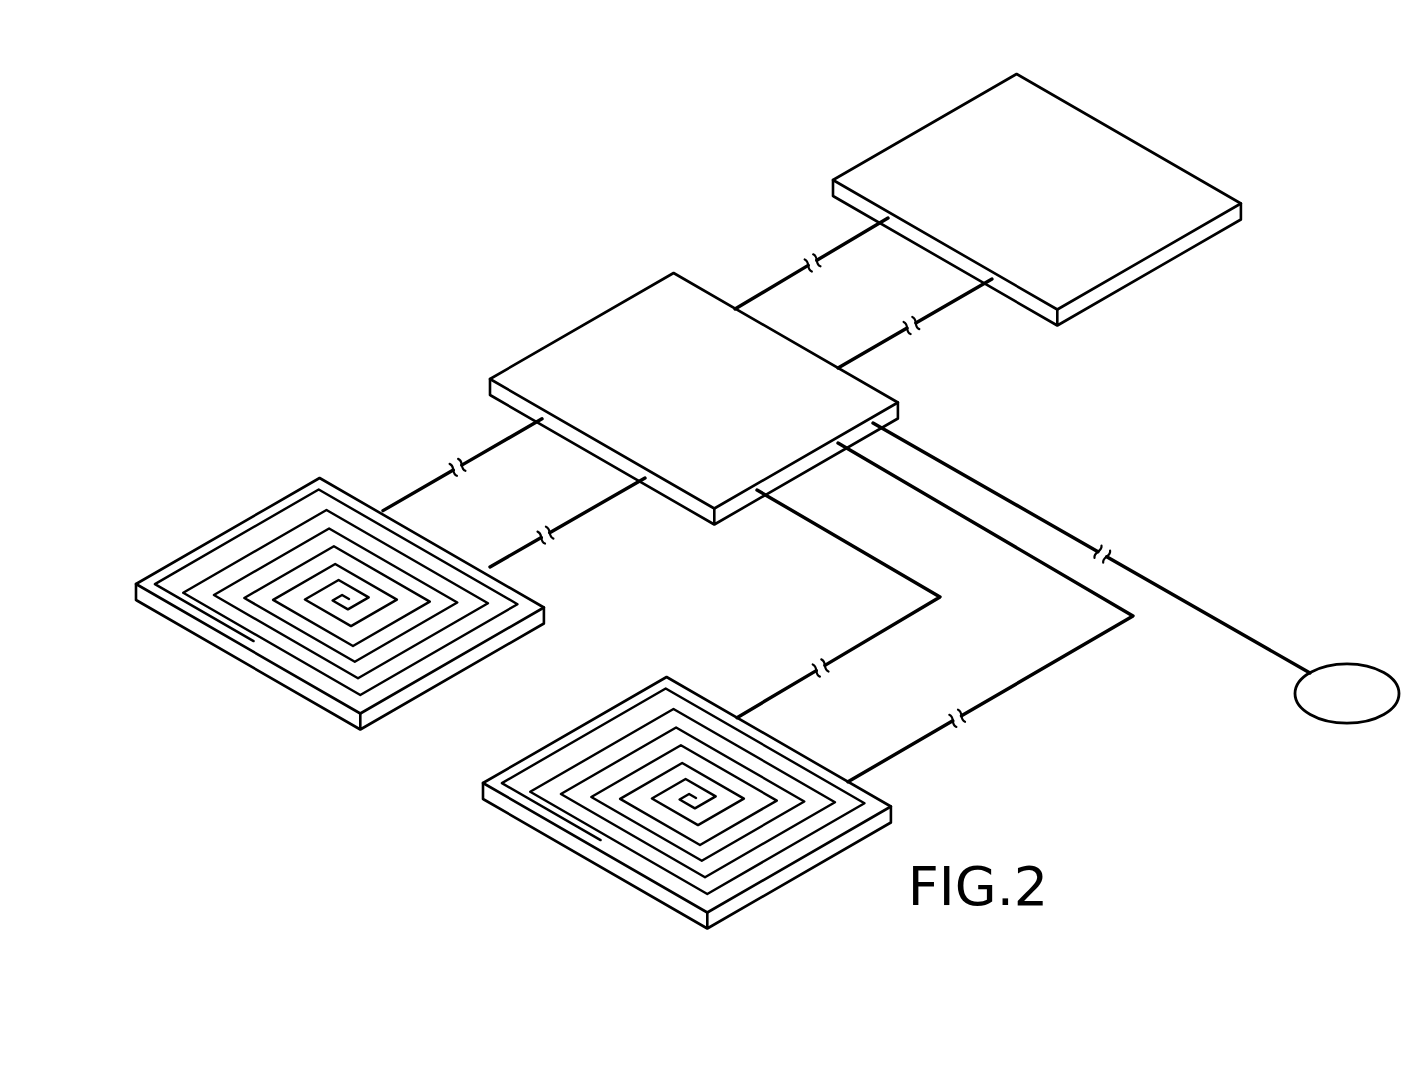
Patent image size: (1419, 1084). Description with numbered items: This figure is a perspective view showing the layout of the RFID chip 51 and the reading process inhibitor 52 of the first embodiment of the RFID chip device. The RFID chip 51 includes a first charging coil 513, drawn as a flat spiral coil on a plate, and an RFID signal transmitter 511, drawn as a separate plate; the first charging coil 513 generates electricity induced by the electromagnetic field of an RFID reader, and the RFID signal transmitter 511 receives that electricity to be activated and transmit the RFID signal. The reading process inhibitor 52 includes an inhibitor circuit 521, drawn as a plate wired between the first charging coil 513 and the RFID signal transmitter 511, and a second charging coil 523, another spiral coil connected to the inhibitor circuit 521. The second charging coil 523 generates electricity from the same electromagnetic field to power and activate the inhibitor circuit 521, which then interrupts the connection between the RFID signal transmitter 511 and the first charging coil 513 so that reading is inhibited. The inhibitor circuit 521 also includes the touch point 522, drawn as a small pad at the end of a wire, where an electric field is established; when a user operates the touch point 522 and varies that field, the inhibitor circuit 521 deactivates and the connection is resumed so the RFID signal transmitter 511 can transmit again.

The RFID chip 51 is at (1046, 195).
The RFID signal transmitter 511 is at (1142, 190).
The first charging coil 513 is at (258, 527).
The reading process inhibitor 52 is at (693, 354).
The inhibitor circuit 521 is at (582, 363).
The touch point 522 is at (1345, 688).
The second charging coil 523 is at (578, 817).